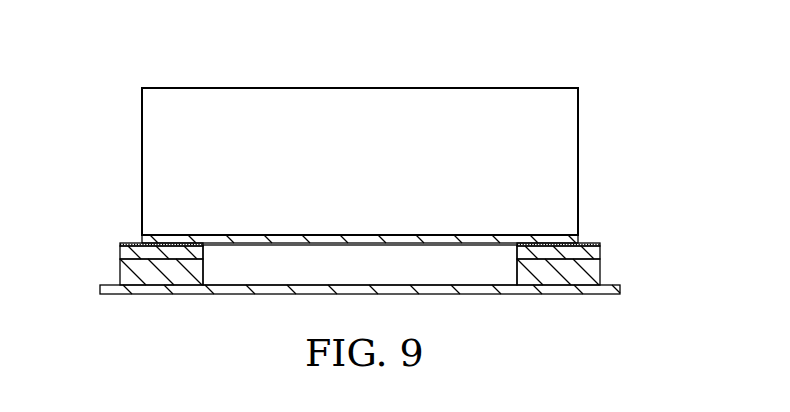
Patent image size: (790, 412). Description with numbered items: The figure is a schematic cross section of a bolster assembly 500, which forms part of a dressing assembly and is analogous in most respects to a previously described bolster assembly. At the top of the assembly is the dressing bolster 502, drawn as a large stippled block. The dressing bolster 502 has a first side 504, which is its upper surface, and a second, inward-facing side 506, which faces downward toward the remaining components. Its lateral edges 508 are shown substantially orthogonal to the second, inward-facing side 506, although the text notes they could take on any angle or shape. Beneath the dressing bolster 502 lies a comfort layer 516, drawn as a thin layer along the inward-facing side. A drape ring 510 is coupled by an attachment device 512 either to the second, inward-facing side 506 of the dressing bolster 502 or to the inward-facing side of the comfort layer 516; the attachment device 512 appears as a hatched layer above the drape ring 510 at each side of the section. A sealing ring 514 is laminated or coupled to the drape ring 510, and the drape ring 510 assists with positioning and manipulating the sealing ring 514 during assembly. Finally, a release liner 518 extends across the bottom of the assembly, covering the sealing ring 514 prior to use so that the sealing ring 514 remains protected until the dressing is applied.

The bolster assembly 500 is at (487, 63).
The dressing bolster 502 is at (384, 181).
The first side 504 is at (256, 88).
The second, inward-facing side 506 is at (336, 245).
The lateral edges 508 is at (142, 153).
The drape ring 510 is at (603, 259).
The attachment device 512 is at (600, 246).
The sealing ring 514 is at (120, 270).
The comfort layer 516 is at (140, 243).
The release liner 518 is at (612, 294).